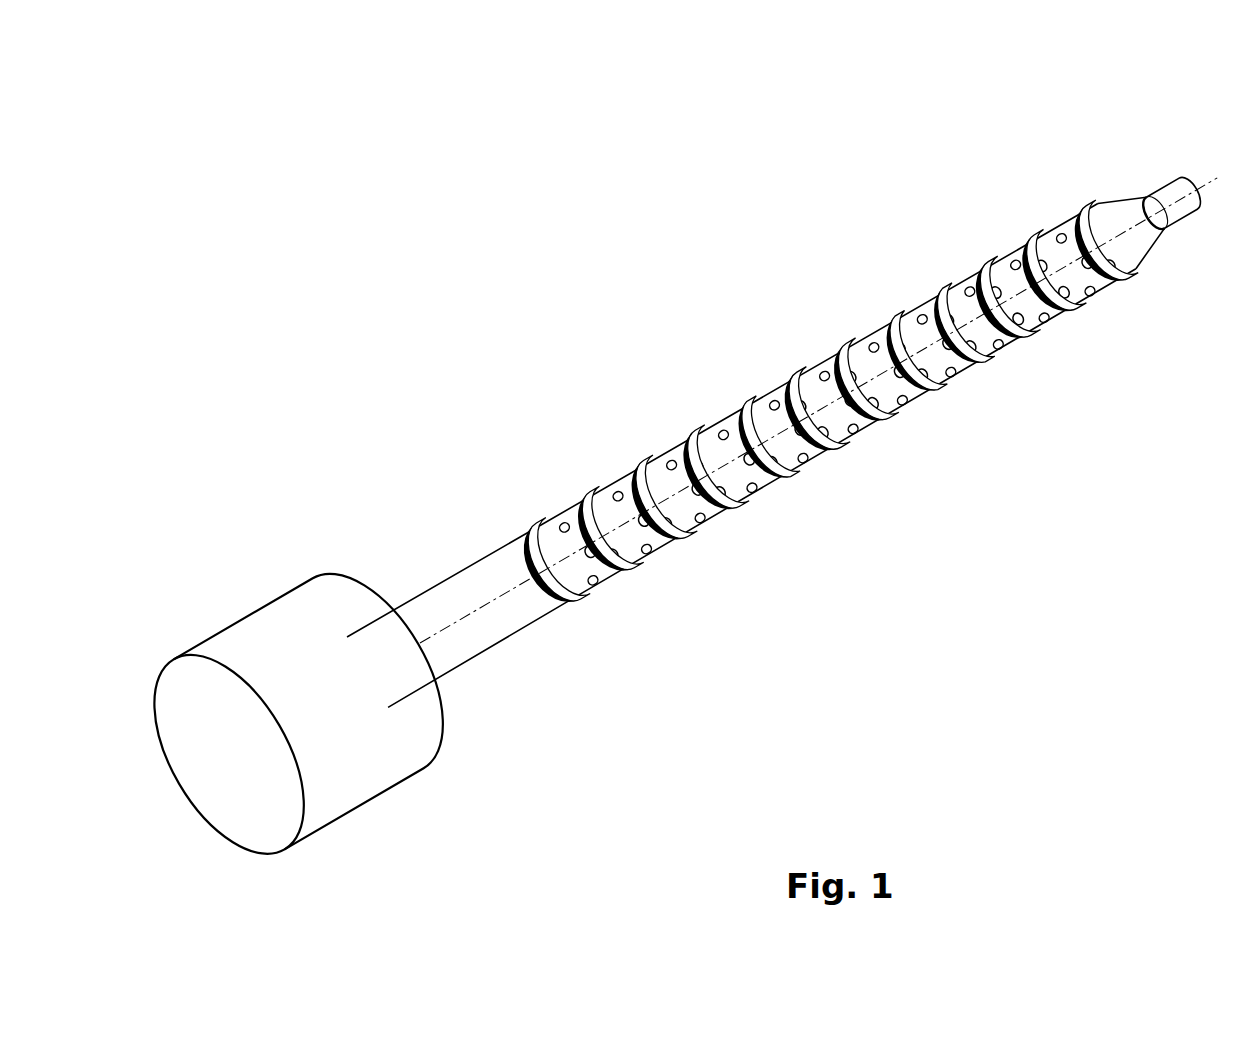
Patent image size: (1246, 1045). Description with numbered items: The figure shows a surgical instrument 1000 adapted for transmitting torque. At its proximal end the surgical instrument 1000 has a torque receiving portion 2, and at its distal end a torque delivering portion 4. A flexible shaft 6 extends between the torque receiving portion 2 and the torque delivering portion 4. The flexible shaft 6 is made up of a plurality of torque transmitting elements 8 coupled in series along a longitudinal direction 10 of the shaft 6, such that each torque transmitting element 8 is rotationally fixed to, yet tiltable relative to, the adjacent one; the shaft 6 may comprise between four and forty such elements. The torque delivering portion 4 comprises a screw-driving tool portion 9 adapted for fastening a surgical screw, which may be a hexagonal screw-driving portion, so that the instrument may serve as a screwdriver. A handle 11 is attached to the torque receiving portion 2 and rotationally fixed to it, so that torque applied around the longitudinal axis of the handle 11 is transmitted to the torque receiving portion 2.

The surgical instrument 1000 is at (415, 195).
The torque receiving portion 2 is at (414, 563).
The torque delivering portion 4 is at (1068, 186).
The flexible shaft 6 is at (758, 381).
The torque transmitting elements 8 is at (773, 453).
The screw-driving tool portion 9 is at (1163, 192).
The longitudinal direction 10 is at (513, 587).
The handle 11 is at (300, 618).